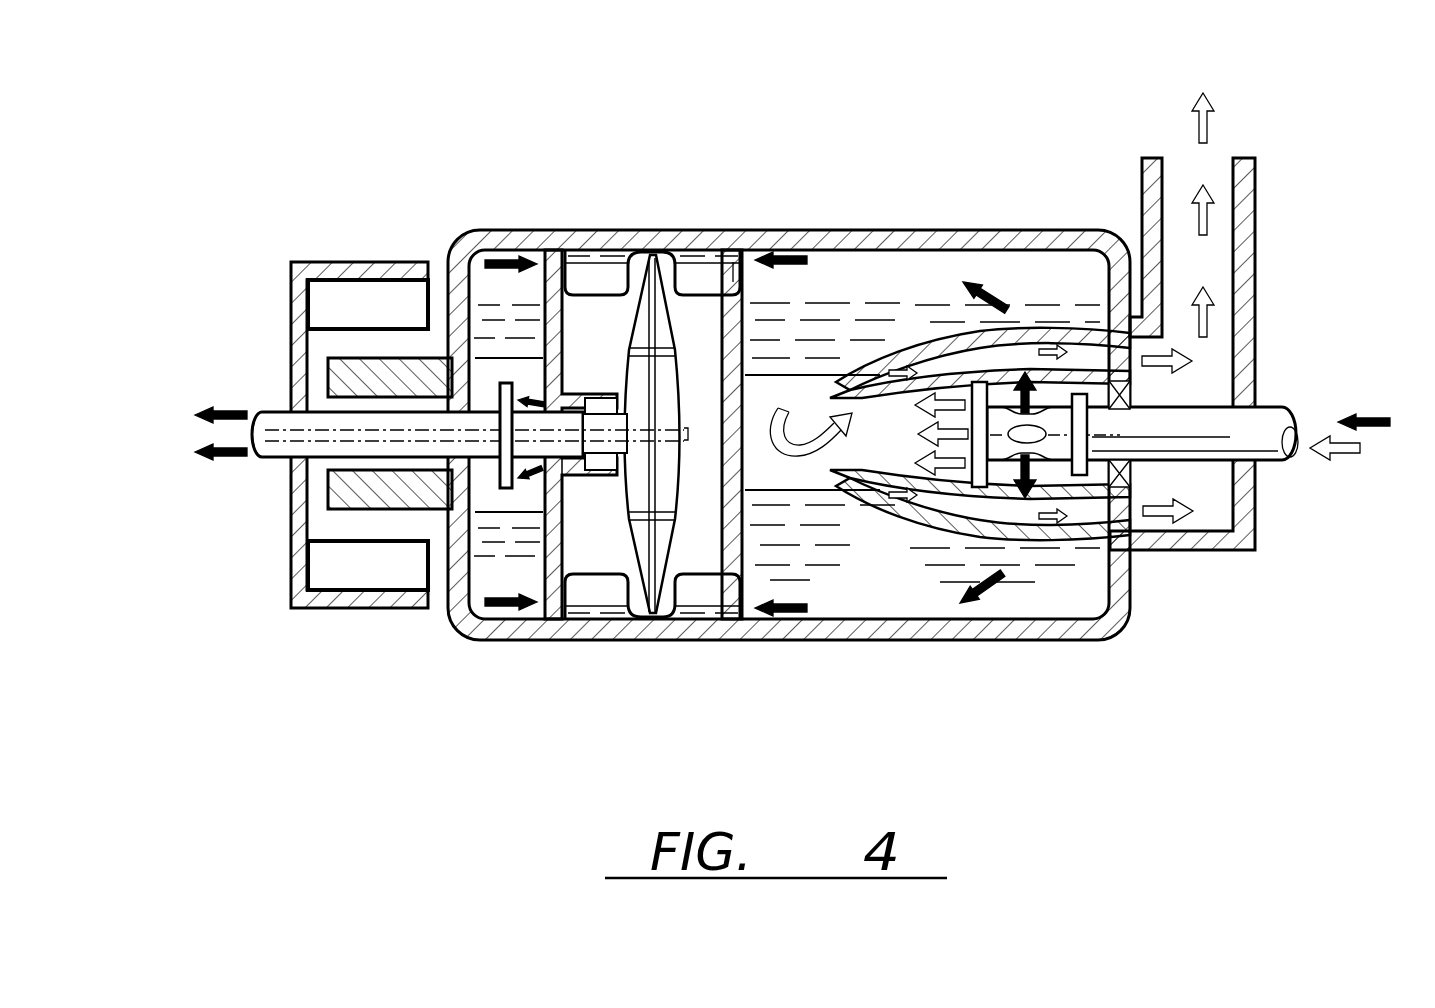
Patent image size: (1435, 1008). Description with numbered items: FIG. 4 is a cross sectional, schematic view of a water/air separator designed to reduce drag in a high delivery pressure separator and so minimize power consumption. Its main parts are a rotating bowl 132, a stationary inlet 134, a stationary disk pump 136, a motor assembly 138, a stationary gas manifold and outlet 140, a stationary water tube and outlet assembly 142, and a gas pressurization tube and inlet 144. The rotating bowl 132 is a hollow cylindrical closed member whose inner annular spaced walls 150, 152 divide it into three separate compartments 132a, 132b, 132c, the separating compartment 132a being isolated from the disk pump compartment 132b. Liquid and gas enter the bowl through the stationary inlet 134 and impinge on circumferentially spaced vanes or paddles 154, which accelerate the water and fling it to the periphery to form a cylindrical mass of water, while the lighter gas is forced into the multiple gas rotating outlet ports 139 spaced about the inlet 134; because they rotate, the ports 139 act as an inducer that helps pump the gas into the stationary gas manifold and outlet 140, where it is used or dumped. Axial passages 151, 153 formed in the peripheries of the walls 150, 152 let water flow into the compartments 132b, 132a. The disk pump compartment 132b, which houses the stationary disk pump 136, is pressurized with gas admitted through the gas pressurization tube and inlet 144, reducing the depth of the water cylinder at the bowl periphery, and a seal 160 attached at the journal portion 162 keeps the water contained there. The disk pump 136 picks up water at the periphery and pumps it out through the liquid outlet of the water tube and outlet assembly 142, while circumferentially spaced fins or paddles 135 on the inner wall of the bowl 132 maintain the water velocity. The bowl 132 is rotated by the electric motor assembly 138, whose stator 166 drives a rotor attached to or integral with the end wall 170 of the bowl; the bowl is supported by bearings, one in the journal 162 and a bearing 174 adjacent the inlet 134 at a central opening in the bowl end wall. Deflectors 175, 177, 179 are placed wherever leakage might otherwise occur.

The rotating bowl 132 is at (843, 345).
The separating compartment 132a is at (452, 272).
The disk pump compartment 132b is at (683, 317).
The compartment 132c is at (918, 263).
The stationary inlet 134 is at (1257, 447).
The fins or paddles 135 is at (697, 587).
The stationary disk pump 136 is at (660, 537).
The motor assembly 138 is at (297, 625).
The gas rotating outlet ports 139 is at (887, 375).
The stationary gas manifold and outlet 140 is at (1253, 288).
The stationary water tube and outlet assembly 142 is at (285, 458).
The gas pressurization tube and inlet 144 is at (258, 426).
The inner annular wall 150 is at (537, 267).
The axial passage 151 is at (735, 282).
The inner annular wall 152 is at (750, 262).
The axial passage 153 is at (556, 256).
The vanes or paddles 154 is at (887, 375).
The seal 160 is at (590, 472).
The journal portion 162 is at (567, 476).
The stator 166 is at (293, 569).
The end wall 170 is at (1372, 371).
The bearing 174 is at (1138, 317).
The deflector 175 is at (503, 488).
The deflector 177 is at (1173, 552).
The deflector 179 is at (978, 488).